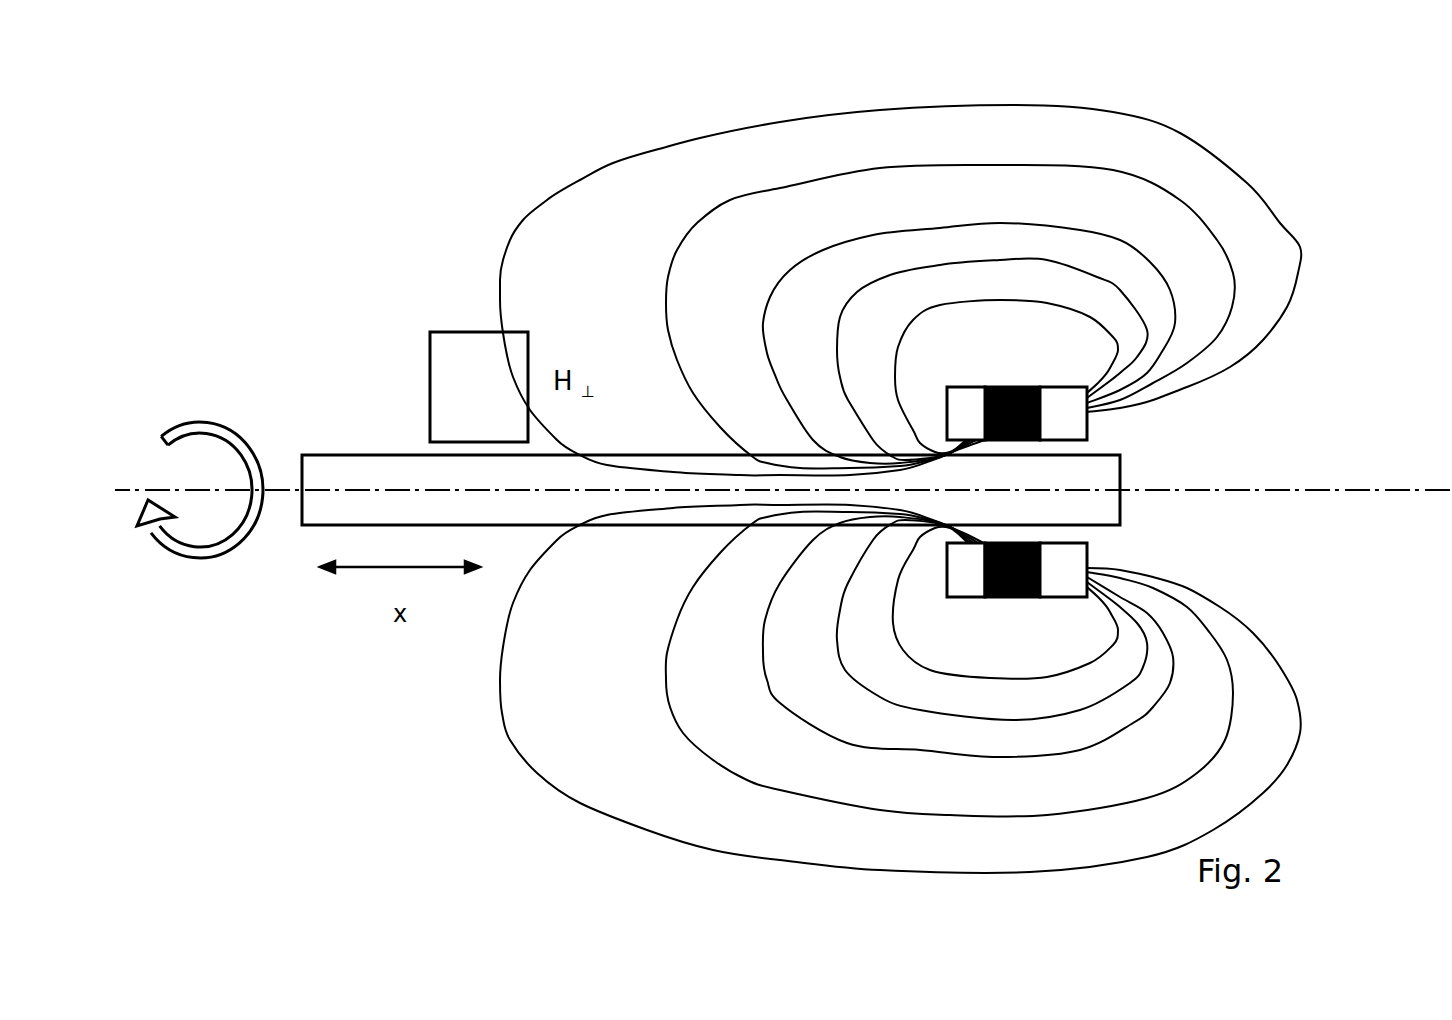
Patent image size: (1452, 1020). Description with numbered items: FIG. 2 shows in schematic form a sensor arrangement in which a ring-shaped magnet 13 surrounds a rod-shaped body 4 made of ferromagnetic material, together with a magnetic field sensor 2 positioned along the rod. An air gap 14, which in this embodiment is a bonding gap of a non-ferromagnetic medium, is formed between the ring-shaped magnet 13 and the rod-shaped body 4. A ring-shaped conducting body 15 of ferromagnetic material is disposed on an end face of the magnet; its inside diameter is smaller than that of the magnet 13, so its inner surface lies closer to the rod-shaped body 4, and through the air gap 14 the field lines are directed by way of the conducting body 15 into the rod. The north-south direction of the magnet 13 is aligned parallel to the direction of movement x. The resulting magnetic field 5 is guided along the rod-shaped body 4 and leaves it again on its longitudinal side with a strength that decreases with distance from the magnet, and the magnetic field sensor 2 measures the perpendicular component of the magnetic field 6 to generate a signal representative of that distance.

The magnetic field sensor 2 is at (364, 279).
The rod-shaped body 4 is at (320, 507).
The magnetic field 5 is at (870, 237).
The magnetic field 6 is at (527, 390).
The ring-shaped magnet 13 is at (1154, 235).
The air gap 14 is at (1083, 445).
The ring-shaped conducting body 15 is at (968, 397).